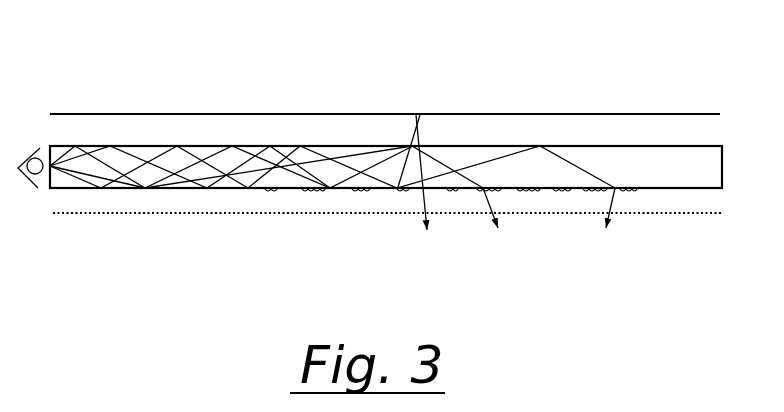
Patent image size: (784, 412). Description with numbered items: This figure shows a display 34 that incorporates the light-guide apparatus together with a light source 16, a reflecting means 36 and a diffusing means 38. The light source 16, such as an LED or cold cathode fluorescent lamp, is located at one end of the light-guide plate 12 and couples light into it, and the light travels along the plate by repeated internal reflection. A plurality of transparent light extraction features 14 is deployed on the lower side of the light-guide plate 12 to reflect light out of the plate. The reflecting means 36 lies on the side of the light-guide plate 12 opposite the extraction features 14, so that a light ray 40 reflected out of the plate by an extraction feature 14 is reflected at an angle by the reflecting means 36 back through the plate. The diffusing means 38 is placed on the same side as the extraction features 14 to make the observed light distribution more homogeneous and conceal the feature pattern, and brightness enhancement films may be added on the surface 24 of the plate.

The light-guide plate 12 is at (647, 146).
The light extraction features 14 is at (398, 187).
The light source 16 is at (40, 175).
The surface of the light guide plate 24 is at (473, 146).
The display 34 is at (108, 100).
The reflecting means 36 is at (582, 114).
The diffusing means 38 is at (192, 213).
The light ray 40 is at (421, 140).